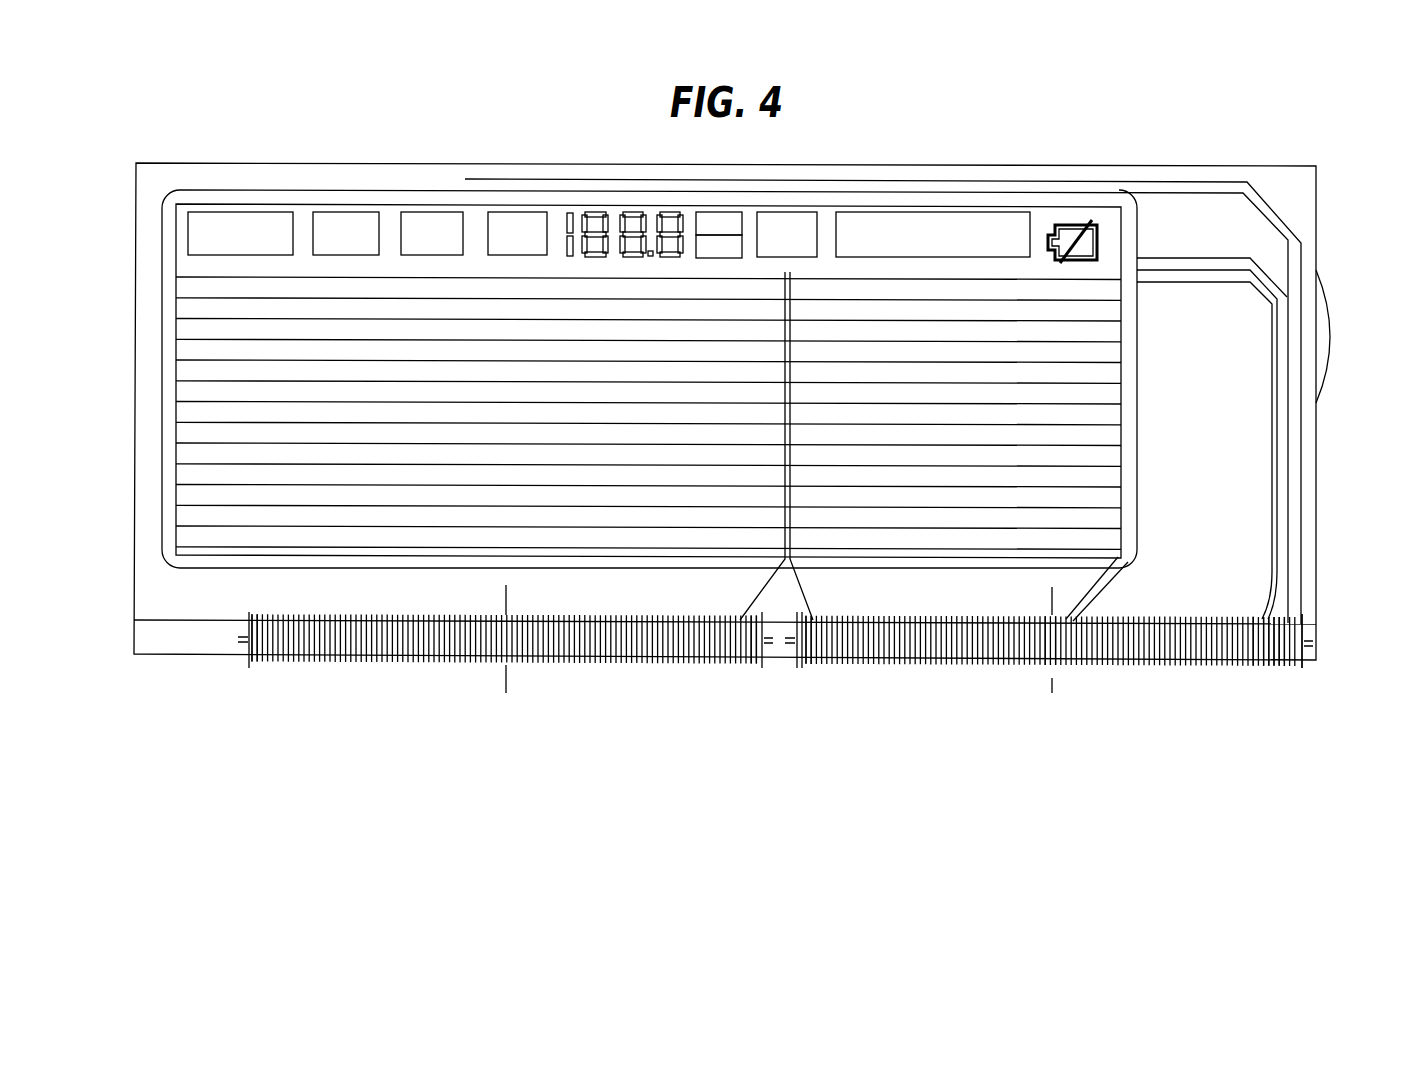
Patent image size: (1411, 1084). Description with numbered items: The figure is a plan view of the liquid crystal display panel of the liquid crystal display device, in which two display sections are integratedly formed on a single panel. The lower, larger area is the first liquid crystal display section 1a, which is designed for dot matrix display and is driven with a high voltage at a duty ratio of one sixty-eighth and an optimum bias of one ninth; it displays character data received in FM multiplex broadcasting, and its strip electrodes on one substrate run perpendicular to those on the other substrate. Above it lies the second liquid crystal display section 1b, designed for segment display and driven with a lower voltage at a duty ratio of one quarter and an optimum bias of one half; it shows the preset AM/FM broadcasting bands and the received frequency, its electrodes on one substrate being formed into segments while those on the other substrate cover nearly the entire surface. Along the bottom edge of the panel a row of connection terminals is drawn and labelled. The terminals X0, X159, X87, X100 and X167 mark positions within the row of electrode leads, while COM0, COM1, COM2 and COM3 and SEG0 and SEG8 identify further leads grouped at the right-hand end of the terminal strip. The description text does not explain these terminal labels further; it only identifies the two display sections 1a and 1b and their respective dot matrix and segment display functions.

The first liquid crystal display section 1a is at (205, 400).
The second liquid crystal display section 1b is at (180, 240).
The segment electrode terminal X0 is at (259, 673).
The segment electrode terminal X159 is at (737, 674).
The segment electrode terminal X87 is at (1043, 676).
The segment electrode terminal X100 is at (1138, 778).
The segment electrode terminal X167 is at (1250, 676).
The common electrode terminal COM0 is at (1269, 679).
The common electrode terminal COM1 is at (1275, 679).
The common electrode terminal COM2 is at (1281, 679).
The common electrode terminal COM3 is at (1263, 679).
The segment terminal SEG0 is at (1405, 722).
The segment terminal SEG8 is at (1287, 678).